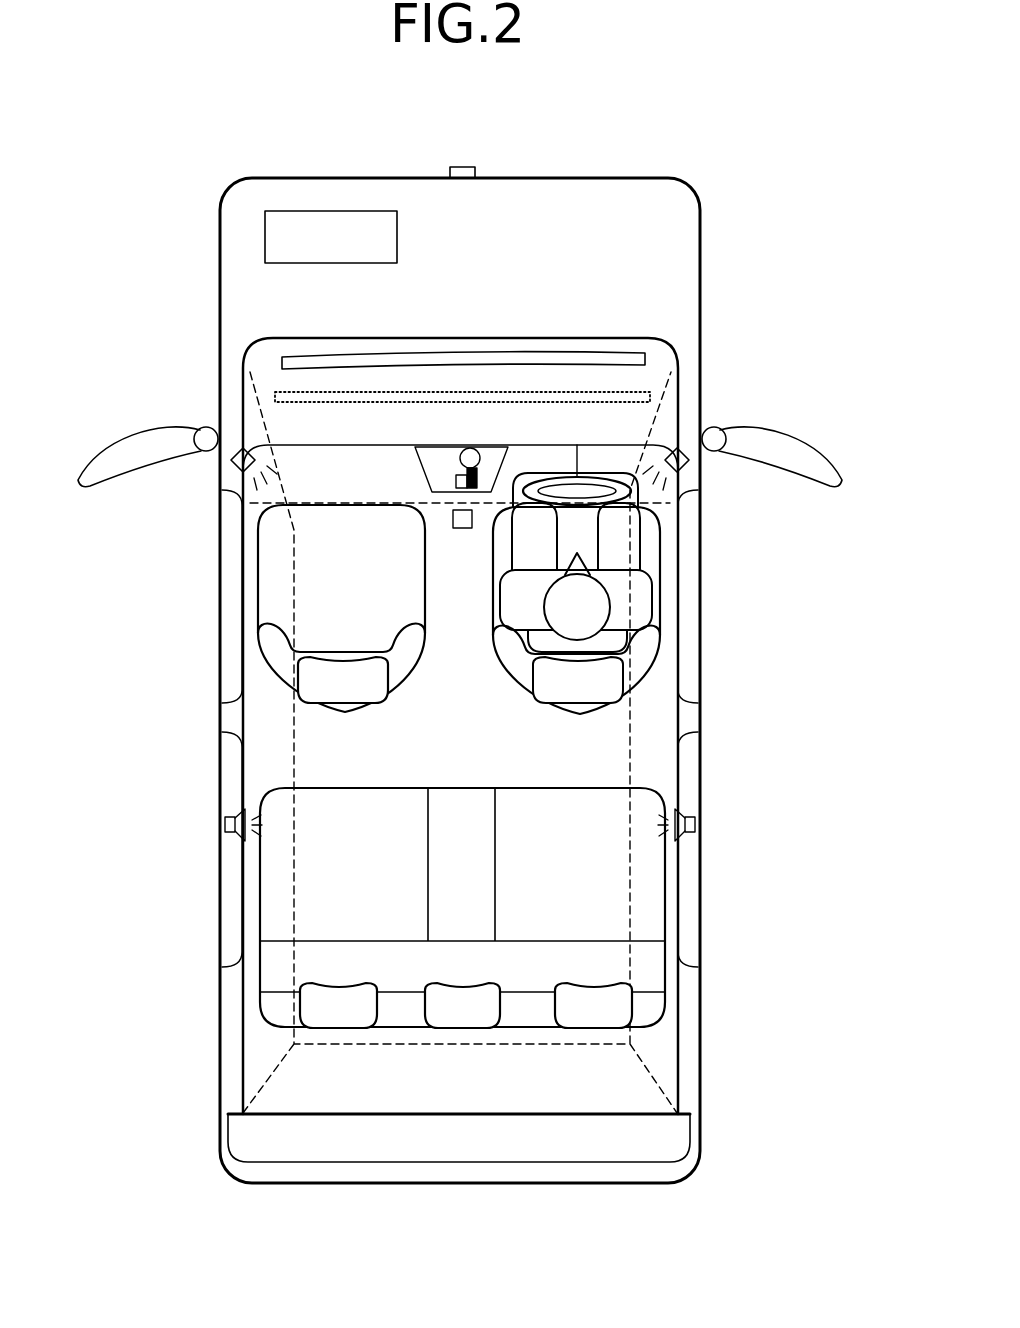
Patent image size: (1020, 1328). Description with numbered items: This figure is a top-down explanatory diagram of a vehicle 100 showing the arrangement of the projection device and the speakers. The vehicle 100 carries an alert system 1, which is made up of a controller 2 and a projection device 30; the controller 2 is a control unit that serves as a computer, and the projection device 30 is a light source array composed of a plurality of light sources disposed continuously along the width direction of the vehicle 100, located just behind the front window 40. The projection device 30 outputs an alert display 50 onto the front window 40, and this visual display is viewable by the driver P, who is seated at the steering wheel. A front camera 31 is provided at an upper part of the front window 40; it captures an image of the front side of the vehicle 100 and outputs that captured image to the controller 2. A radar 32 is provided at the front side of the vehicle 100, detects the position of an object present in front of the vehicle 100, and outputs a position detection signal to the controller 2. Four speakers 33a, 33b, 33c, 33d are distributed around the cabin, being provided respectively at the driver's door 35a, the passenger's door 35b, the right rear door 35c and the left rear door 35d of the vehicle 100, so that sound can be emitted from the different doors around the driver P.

The vehicle 100 is at (640, 176).
The alert system 1 is at (455, 290).
The controller 2 is at (397, 237).
The projection device 30 is at (428, 355).
The front camera 31 is at (462, 528).
The radar 32 is at (461, 166).
The speaker 33a is at (690, 468).
The speaker 33b is at (273, 447).
The speaker 33c is at (697, 824).
The speaker 33d is at (224, 824).
The driver's door 35a is at (690, 592).
The passenger's door 35b is at (234, 590).
The right rear door 35c is at (690, 883).
The left rear door 35d is at (232, 886).
The front window 40 is at (657, 356).
The alert display 50 is at (530, 402).
The driver P is at (545, 602).